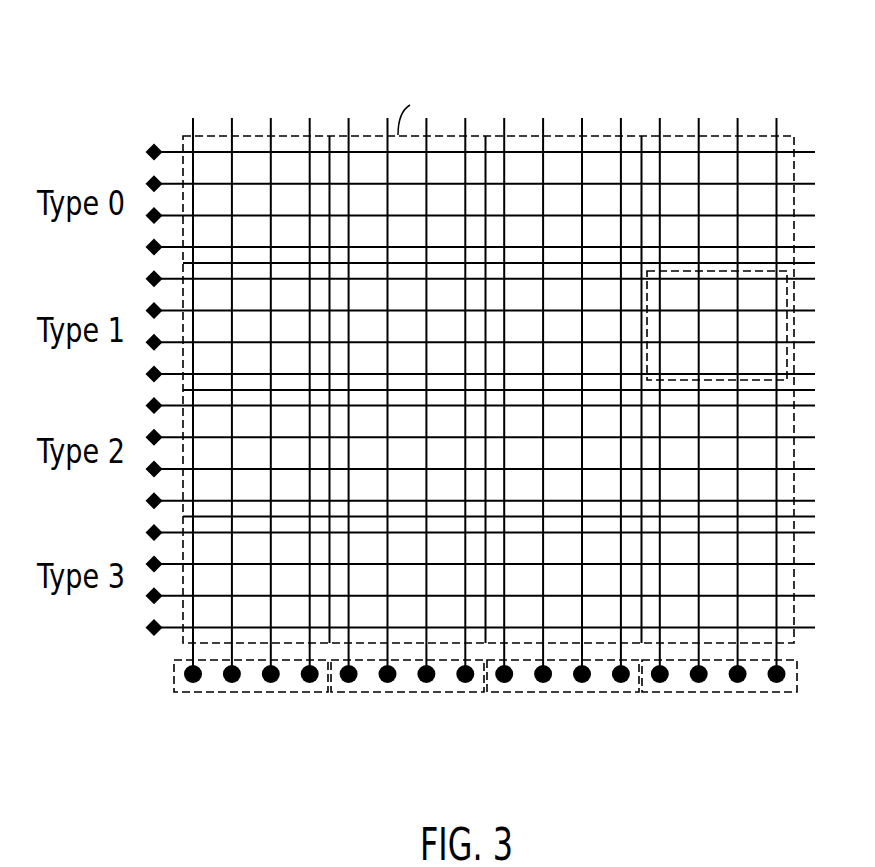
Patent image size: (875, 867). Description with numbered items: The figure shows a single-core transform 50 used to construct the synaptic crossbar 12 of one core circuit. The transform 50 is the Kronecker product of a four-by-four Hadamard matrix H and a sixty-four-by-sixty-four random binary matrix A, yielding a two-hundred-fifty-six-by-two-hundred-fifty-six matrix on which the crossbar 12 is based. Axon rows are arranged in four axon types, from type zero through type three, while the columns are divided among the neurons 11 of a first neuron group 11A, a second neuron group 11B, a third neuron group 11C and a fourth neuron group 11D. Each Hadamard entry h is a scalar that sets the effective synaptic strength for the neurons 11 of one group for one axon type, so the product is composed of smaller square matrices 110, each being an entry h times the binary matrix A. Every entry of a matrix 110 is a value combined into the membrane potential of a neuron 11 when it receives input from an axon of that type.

The synaptic crossbar 12 is at (491, 47).
The single-core transform 50 is at (208, 110).
The smaller square matrix 110 is at (787, 292).
The electronic neuron 11 is at (426, 683).
The first neuron group 11A is at (312, 693).
The second neuron group 11B is at (465, 692).
The third neuron group 11C is at (621, 692).
The fourth neuron group 11D is at (776, 692).